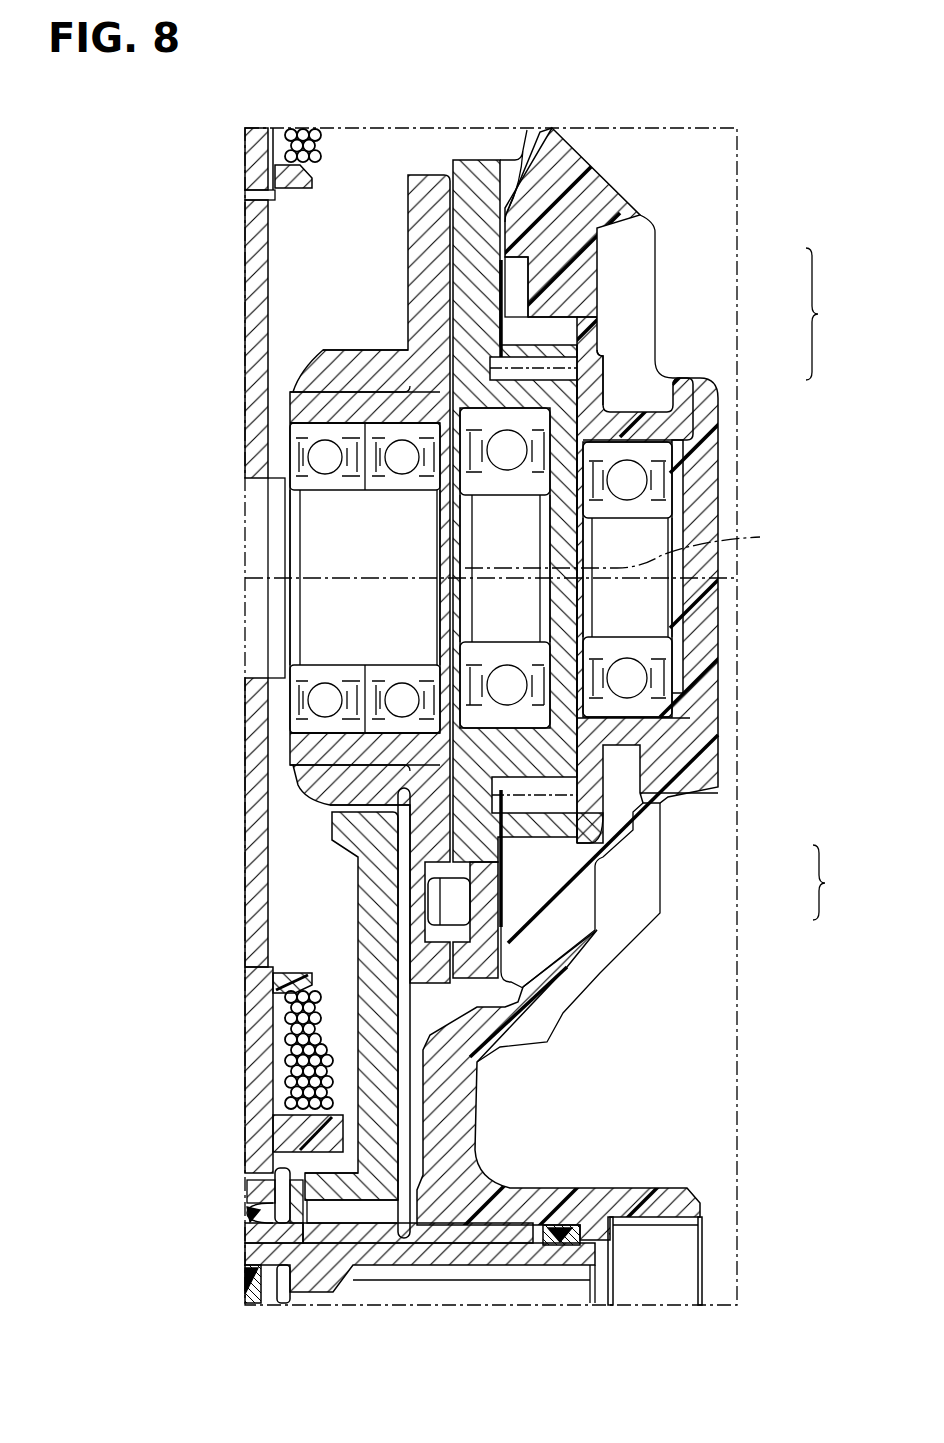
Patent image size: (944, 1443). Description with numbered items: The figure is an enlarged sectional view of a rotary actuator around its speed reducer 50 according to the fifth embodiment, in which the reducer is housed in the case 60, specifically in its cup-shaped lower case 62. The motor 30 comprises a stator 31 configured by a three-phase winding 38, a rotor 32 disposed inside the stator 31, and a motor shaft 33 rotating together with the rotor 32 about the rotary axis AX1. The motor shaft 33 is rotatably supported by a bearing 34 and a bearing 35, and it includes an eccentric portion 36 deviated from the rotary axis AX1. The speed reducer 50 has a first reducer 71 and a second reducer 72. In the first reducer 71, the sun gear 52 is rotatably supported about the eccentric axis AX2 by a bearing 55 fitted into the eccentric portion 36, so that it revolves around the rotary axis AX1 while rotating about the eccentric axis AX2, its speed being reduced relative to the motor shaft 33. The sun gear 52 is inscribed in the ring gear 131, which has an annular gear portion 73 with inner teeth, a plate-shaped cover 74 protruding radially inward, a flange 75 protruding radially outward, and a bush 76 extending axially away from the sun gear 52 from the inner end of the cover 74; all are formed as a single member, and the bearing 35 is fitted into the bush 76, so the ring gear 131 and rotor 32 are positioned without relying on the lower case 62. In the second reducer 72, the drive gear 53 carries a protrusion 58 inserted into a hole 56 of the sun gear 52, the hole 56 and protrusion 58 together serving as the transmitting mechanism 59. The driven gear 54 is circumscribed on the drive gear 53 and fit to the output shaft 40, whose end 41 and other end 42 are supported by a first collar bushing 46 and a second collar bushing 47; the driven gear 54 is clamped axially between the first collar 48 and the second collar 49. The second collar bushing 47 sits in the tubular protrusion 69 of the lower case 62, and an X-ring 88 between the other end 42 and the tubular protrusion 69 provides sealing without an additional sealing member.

The motor 30 is at (322, 142).
The stator 31 is at (262, 161).
The rotor 32 is at (258, 248).
The motor shaft 33 is at (322, 540).
The bearing 34 is at (323, 700).
The bearing 35 is at (632, 680).
The eccentric portion 36 is at (528, 530).
The three-phase winding 38 is at (292, 130).
The output shaft 40 is at (348, 1250).
The end 41 is at (268, 1259).
The other end 42 is at (517, 1255).
The first collar bushing 46 is at (273, 1267).
The second collar bushing 47 is at (470, 1243).
The first collar 48 is at (297, 1193).
The second collar 49 is at (443, 1227).
The speed reducer 50 is at (322, 352).
The sun gear 52 is at (515, 232).
The drive gear 53 is at (312, 412).
The driven gear 54 is at (373, 923).
The bearing 55 is at (622, 738).
The hole 56 is at (482, 902).
The protrusion 58 is at (466, 908).
The transmitting mechanism 59 is at (834, 882).
The case 60 is at (582, 140).
The lower case 62 is at (523, 148).
The tubular protrusion 69 is at (641, 1208).
The first reducer 71 is at (476, 158).
The second reducer 72 is at (425, 172).
The gear portion 73 is at (518, 296).
The cover 74 is at (555, 340).
The flange 75 is at (525, 282).
The bush 76 is at (600, 386).
The X-ring 88 is at (560, 1245).
The ring gear 131 is at (833, 314).
The rotary axis AX1 is at (714, 600).
The eccentric axis AX2 is at (640, 542).